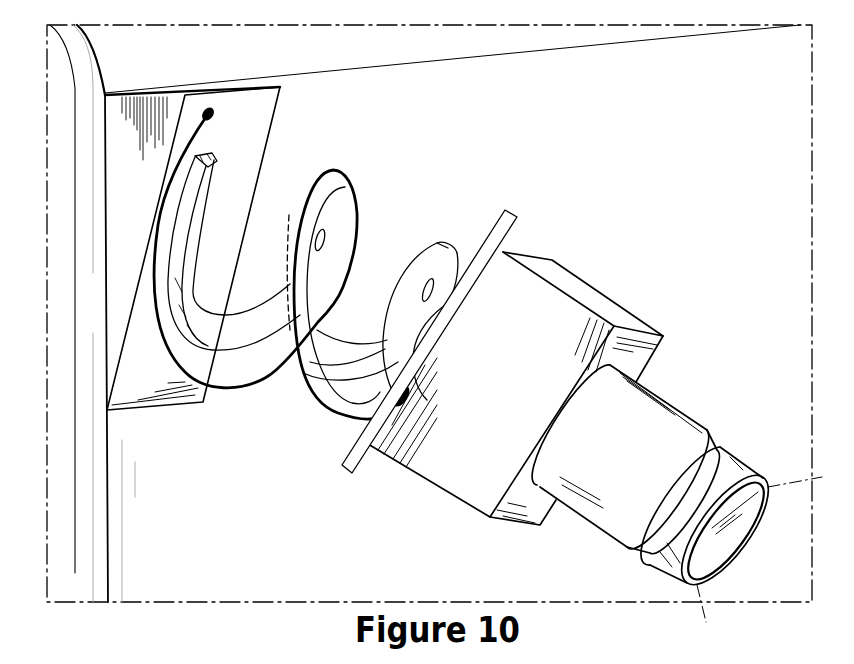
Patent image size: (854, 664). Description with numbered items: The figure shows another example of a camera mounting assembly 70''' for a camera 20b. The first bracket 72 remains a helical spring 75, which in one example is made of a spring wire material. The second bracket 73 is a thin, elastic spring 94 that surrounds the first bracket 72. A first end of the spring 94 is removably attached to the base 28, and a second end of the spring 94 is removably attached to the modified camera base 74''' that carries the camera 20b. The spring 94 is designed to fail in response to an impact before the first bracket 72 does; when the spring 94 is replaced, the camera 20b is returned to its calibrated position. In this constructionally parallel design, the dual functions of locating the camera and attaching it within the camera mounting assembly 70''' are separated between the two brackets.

The base 28 is at (200, 93).
The second bracket 73 is at (313, 115).
The spring 94 is at (343, 167).
The camera mounting assembly 70''' is at (320, 248).
The first bracket 72 is at (446, 222).
The modified camera base 74''' is at (463, 315).
The helical spring 75 is at (252, 310).
The camera 20b is at (681, 361).